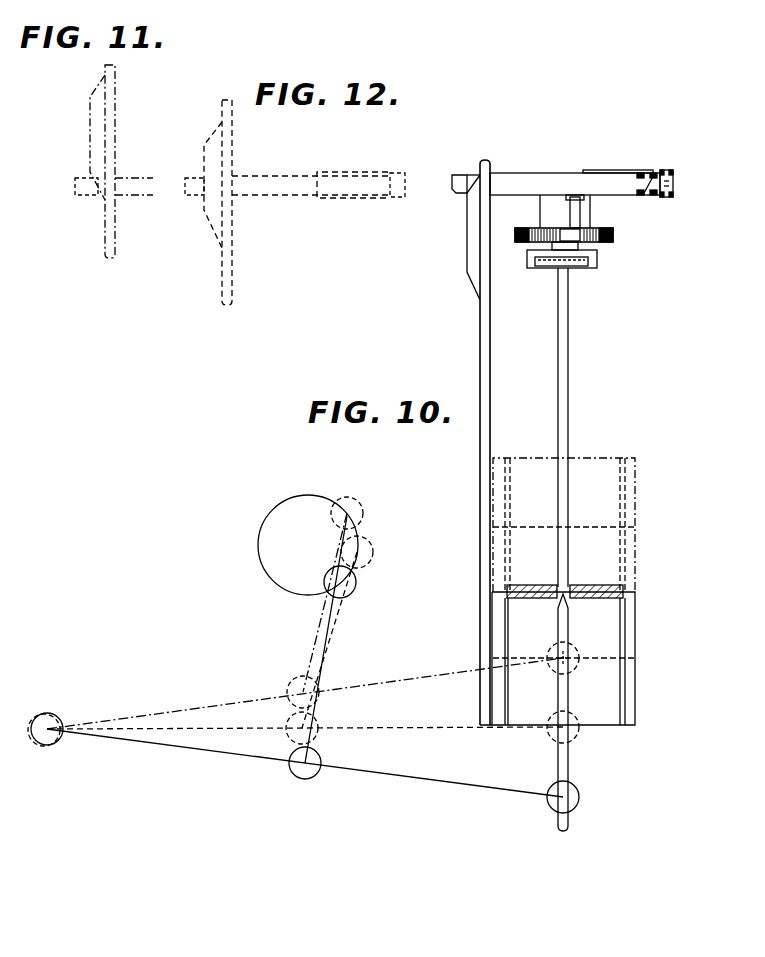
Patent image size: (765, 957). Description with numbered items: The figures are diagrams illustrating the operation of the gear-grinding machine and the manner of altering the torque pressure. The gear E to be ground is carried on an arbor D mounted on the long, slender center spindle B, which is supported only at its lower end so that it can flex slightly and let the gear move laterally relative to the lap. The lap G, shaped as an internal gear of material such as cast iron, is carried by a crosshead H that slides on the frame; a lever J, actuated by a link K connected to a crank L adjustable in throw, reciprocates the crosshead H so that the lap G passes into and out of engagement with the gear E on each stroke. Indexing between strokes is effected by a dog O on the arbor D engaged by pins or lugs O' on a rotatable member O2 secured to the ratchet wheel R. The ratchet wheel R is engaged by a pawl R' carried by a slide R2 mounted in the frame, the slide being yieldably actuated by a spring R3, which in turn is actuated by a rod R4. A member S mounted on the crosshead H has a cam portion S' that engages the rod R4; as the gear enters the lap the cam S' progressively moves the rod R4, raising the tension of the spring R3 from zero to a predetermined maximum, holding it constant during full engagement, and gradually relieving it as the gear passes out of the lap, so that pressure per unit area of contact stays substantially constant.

In FIG. 11, the member S is at (91, 161).
In FIG. 12, the member S is at (213, 202).
In FIG. 10, the member S is at (468, 442).
In FIG. 11, the cam portion S' is at (75, 137).
In FIG. 12, the cam portion S' is at (201, 185).
In FIG. 10, the cam portion S' is at (454, 237).
In FIG. 11, the rod R4 is at (77, 190).
In FIG. 12, the rod R4 is at (193, 190).
In FIG. 10, the rod R4 is at (460, 181).
In FIG. 10, the slide R2 is at (608, 183).
In FIG. 10, the spring R3 is at (649, 175).
In FIG. 10, the pawl R' is at (541, 218).
In FIG. 10, the ratchet wheel R is at (581, 231).
In FIG. 10, the rotatable member O2 is at (550, 247).
In FIG. 10, the pins or lugs O' is at (587, 261).
In FIG. 10, the dog O is at (574, 276).
In FIG. 10, the arbor D is at (568, 414).
In FIG. 10, the gear E is at (588, 587).
In FIG. 10, the lap G is at (632, 636).
In FIG. 10, the crosshead H is at (485, 630).
In FIG. 10, the center spindle B is at (570, 762).
In FIG. 10, the lever J is at (382, 775).
In FIG. 10, the link K is at (337, 620).
In FIG. 10, the crank L is at (270, 553).